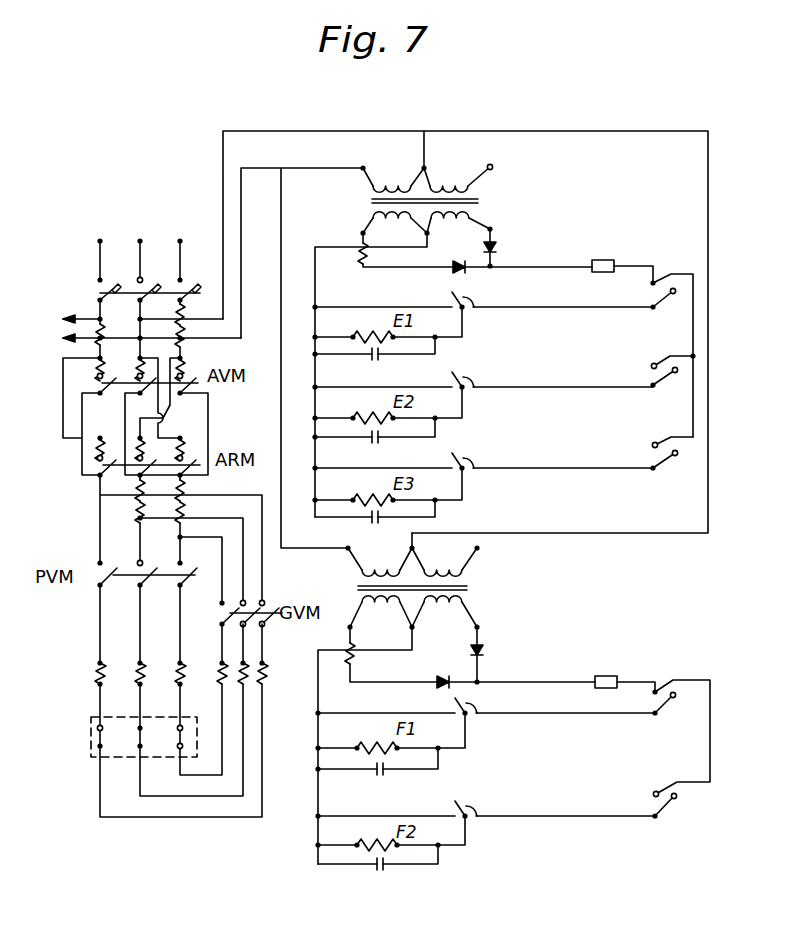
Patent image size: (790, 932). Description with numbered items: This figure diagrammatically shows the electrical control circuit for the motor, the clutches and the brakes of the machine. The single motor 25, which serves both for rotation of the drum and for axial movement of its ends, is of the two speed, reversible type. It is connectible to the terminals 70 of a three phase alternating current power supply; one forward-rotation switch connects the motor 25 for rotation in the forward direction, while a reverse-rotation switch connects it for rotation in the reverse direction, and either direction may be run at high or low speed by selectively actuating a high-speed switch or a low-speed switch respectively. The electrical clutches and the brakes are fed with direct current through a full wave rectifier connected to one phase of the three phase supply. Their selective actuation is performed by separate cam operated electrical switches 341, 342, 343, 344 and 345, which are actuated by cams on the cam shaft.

The terminals 70 is at (180, 233).
The motor 25 is at (91, 746).
The cam operated electrical switch 341 is at (672, 297).
The cam operated electrical switch 342 is at (673, 376).
The cam operated electrical switch 343 is at (673, 459).
The cam operated electrical switch 344 is at (672, 701).
The cam operated electrical switch 345 is at (673, 803).